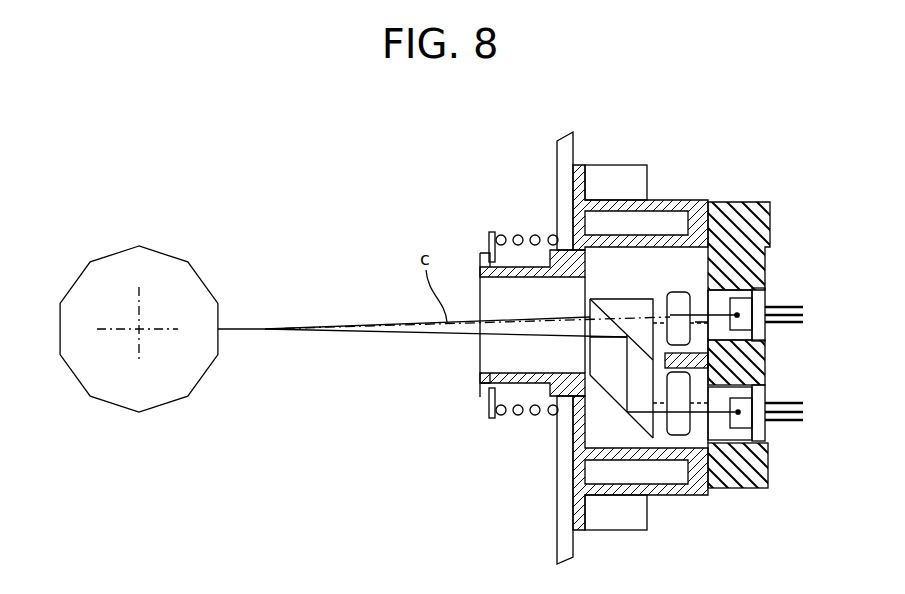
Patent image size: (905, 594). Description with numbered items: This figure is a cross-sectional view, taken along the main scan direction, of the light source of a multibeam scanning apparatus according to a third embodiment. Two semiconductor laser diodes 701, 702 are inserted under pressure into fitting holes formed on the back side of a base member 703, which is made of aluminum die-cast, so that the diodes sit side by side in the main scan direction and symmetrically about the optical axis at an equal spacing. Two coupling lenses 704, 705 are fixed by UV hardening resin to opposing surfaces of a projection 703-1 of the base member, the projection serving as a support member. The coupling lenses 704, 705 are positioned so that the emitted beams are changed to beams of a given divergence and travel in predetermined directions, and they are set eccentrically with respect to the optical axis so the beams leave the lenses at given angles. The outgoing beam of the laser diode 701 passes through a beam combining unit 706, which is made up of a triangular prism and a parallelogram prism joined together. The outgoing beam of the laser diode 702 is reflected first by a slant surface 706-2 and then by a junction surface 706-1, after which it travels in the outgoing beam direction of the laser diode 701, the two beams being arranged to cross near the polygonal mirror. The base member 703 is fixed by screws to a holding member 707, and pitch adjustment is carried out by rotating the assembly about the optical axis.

The semiconductor laser diode 701 is at (757, 290).
The semiconductor laser diode 702 is at (768, 393).
The base member 703 is at (740, 217).
The projection 703-1 is at (747, 476).
The coupling lens 704 is at (677, 297).
The coupling lens 705 is at (677, 436).
The beam combining unit 706 is at (623, 299).
The junction surface 706-1 is at (610, 323).
The slant surface 706-2 is at (613, 402).
The holding member 707 is at (609, 192).